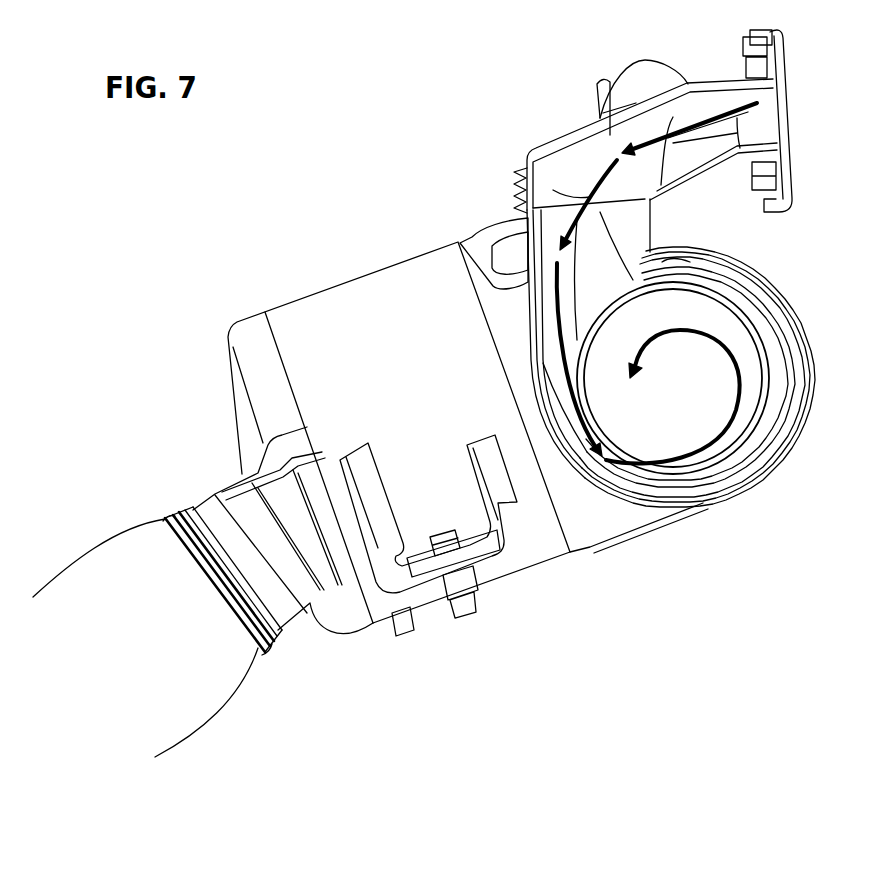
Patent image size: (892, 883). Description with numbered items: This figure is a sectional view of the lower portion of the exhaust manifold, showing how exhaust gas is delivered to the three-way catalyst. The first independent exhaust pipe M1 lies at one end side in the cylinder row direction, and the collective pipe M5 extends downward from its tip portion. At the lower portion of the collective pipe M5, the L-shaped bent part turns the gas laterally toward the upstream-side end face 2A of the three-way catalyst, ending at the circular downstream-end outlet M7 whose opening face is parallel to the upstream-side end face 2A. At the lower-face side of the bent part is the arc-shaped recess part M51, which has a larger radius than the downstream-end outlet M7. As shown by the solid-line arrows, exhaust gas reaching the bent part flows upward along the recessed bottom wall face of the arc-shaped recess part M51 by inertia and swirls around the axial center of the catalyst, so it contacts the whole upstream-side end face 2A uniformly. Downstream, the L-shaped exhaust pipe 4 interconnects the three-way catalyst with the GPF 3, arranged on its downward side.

The GPF 3 is at (398, 283).
The L-shaped exhaust pipe 4 is at (467, 247).
The first independent exhaust pipe M1 is at (718, 95).
The collective pipe M5 is at (628, 230).
The downstream-end outlet M7 is at (720, 313).
The upstream-side end face 2A is at (690, 430).
The arc-shaped recess part M51 is at (640, 480).